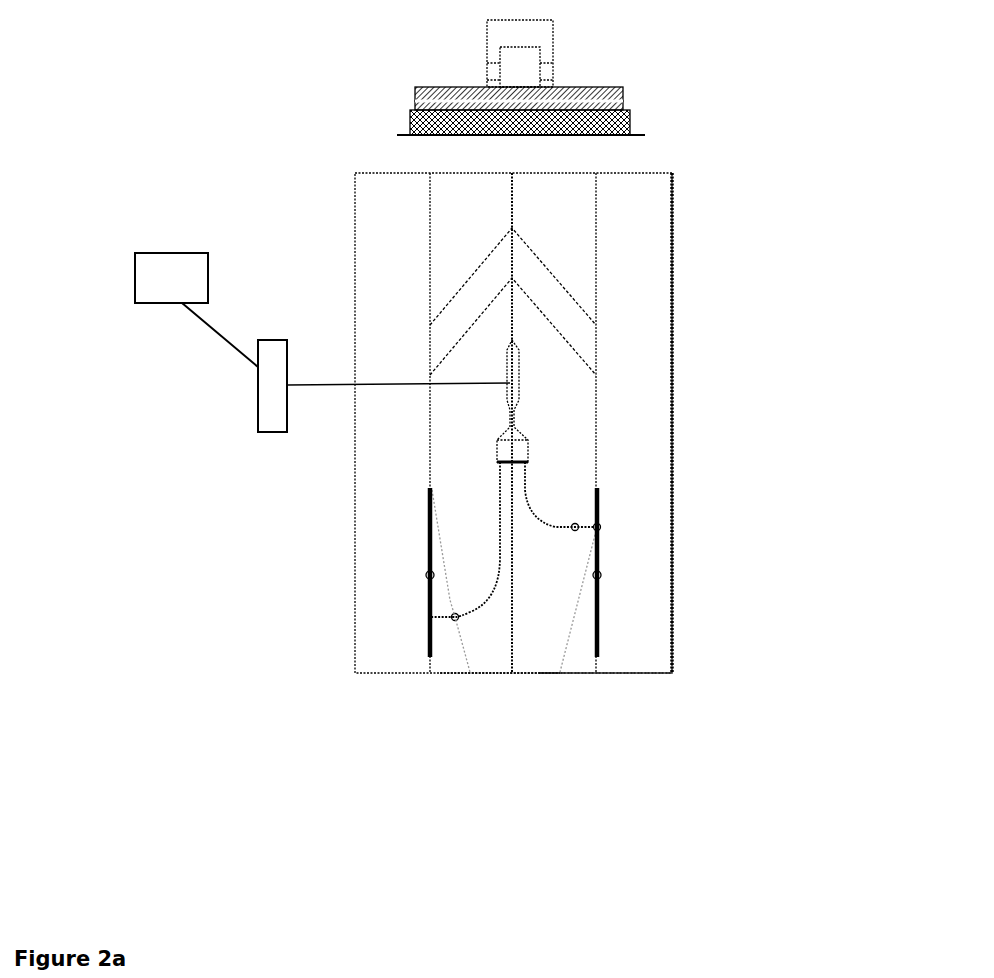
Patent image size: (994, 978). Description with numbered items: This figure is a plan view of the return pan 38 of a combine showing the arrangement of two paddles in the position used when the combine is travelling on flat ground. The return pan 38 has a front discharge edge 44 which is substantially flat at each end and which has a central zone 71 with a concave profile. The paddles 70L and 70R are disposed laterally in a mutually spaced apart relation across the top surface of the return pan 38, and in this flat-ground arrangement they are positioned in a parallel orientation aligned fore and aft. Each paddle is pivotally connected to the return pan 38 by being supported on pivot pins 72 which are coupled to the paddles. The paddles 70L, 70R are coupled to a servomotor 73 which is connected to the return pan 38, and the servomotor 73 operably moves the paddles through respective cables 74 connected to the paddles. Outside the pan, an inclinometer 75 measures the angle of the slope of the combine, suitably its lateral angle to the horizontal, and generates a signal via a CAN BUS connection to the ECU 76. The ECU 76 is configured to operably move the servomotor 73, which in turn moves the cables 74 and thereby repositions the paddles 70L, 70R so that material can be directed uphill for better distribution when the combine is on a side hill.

The return pan 38 is at (637, 222).
The servomotor 73 is at (512, 365).
The cables 74 is at (525, 495).
The pivot pins 72 is at (598, 572).
The left paddle 70L is at (430, 535).
The right paddle 70R is at (600, 628).
The central zone 71 is at (497, 660).
The front discharge edge 44 is at (572, 675).
The inclinometer 75 is at (150, 270).
The ECU 76 is at (271, 395).